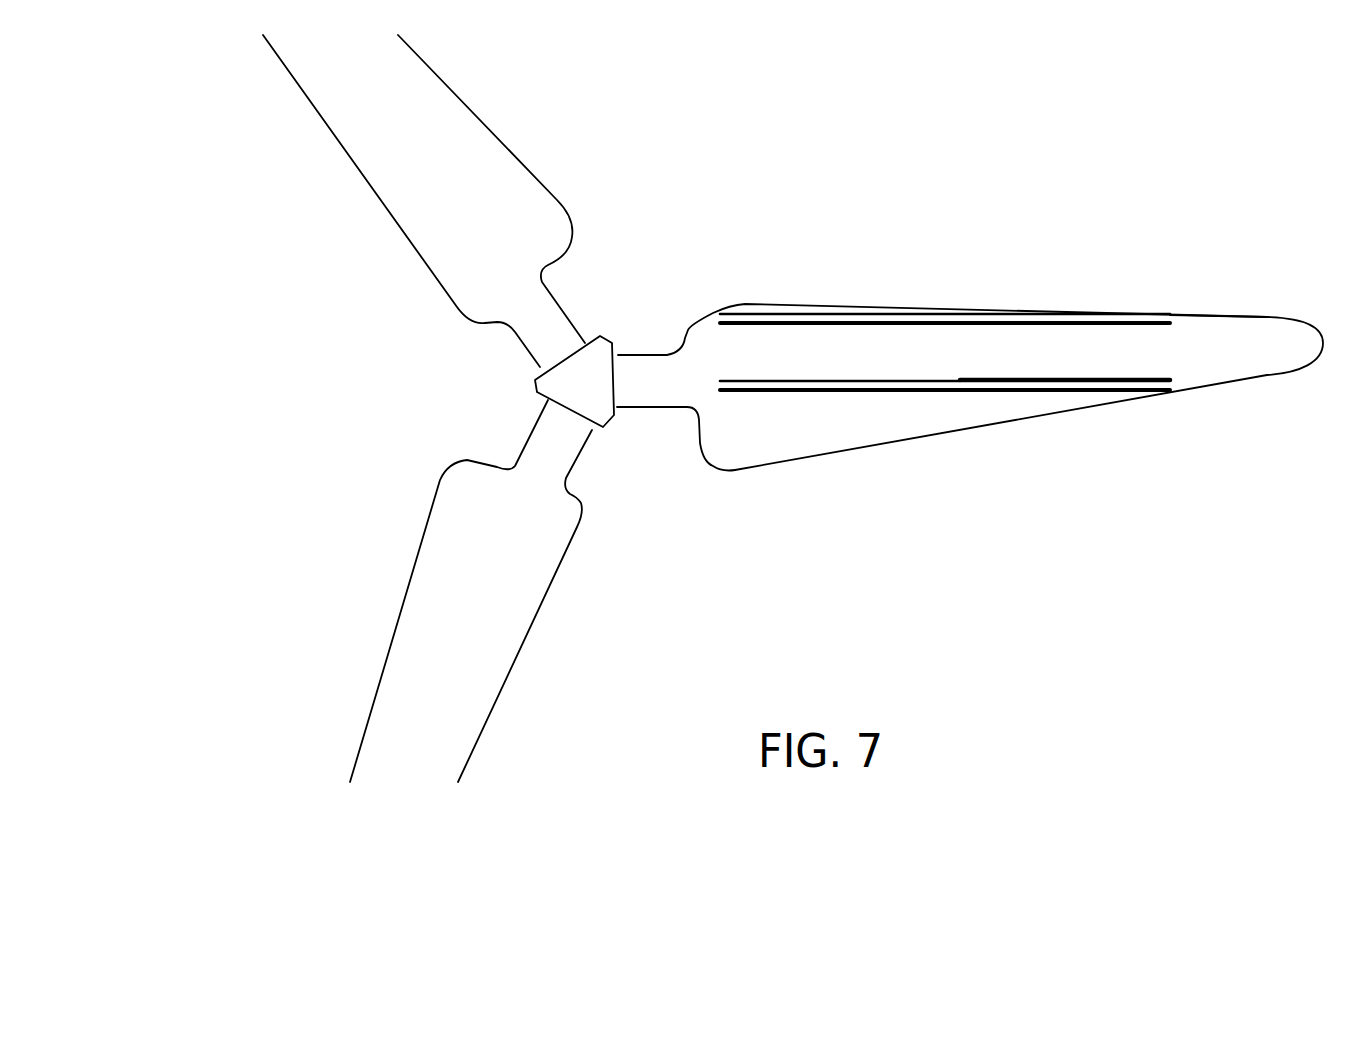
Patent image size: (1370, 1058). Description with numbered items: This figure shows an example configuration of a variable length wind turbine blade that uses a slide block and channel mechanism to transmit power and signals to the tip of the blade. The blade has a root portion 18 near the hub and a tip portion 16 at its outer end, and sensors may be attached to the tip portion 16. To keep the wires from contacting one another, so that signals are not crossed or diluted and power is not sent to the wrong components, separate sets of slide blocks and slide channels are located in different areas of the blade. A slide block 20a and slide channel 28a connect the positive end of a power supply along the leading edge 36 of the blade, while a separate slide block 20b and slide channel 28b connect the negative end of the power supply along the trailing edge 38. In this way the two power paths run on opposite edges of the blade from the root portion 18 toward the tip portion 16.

The tip portion 16 is at (970, 369).
The root portion 18 is at (691, 439).
The slide block 20a is at (840, 315).
The slide block 20b is at (907, 392).
The slide channel 28a is at (973, 313).
The slide channel 28b is at (1048, 392).
The leading edge 36 is at (1200, 313).
The trailing edge 38 is at (842, 457).